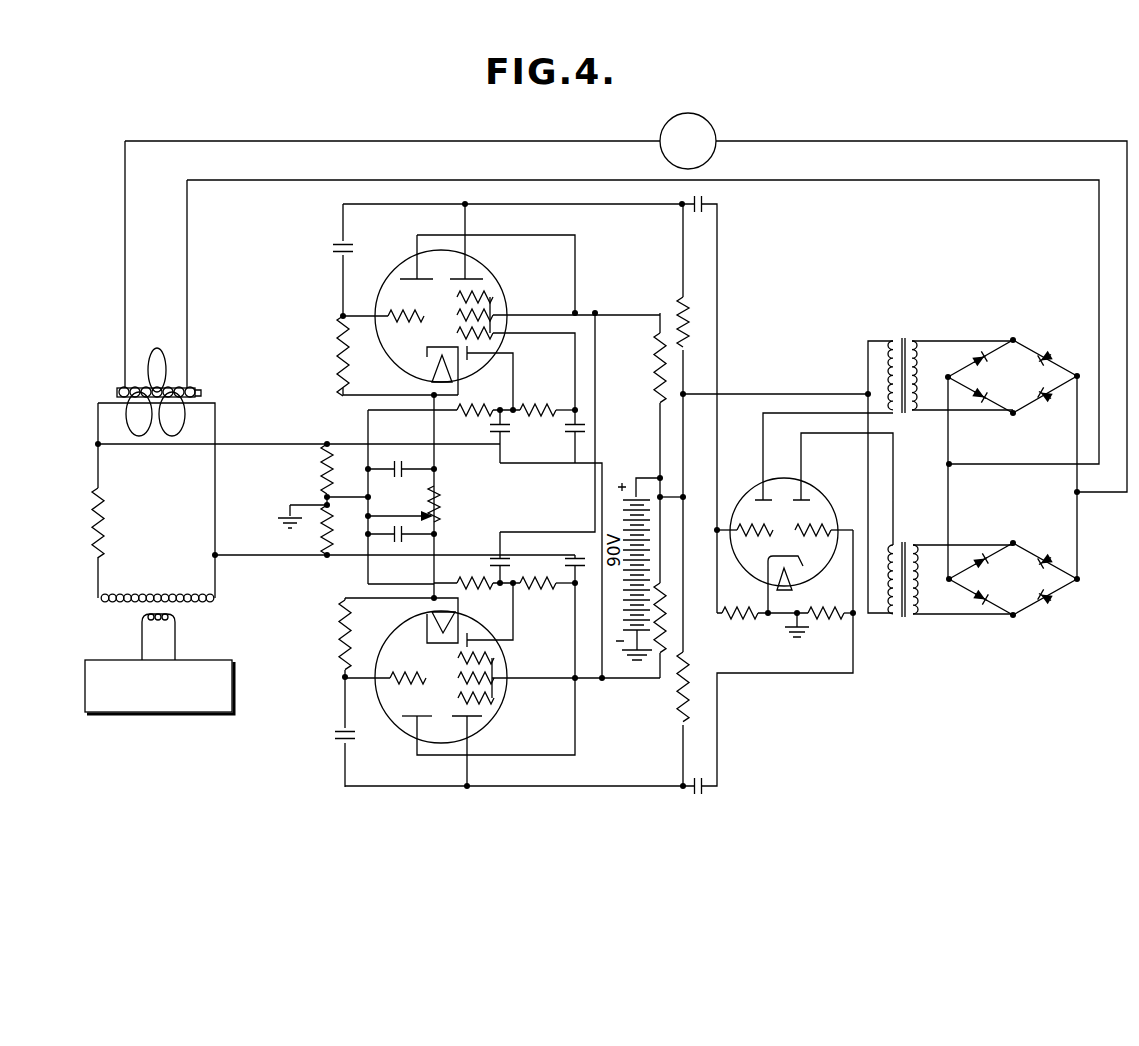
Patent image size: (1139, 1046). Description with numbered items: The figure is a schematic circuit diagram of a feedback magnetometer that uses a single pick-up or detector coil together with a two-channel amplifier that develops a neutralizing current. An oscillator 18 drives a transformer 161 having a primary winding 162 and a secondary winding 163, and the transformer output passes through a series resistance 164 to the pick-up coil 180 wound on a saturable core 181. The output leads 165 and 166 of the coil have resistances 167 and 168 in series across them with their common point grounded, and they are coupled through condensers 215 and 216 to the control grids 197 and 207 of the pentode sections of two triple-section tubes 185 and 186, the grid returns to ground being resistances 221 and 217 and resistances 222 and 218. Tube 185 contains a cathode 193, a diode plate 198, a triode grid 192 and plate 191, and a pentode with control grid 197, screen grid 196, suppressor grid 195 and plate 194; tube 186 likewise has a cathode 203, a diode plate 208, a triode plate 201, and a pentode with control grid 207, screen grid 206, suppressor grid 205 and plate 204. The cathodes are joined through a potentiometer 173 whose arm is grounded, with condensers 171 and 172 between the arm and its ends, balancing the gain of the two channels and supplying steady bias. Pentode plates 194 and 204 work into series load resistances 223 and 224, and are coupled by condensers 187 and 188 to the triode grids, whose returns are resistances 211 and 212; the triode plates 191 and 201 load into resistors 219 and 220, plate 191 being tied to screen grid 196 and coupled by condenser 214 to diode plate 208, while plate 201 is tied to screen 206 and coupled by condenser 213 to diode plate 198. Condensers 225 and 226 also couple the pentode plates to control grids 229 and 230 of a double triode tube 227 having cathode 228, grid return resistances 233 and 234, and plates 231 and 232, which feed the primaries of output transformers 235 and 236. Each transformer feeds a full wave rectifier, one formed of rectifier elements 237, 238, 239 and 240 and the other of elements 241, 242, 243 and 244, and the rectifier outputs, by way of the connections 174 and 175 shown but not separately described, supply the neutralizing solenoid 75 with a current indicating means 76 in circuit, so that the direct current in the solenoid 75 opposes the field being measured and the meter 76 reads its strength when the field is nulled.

The oscillator 18 is at (186, 714).
The neutralizing solenoid 75 is at (160, 348).
The current indicating means 76 is at (712, 122).
The transformer 161 is at (112, 608).
The primary winding 162 is at (168, 625).
The secondary winding 163 is at (173, 596).
The series resistance 164 is at (104, 534).
The output lead 165 is at (258, 446).
The output lead 166 is at (232, 556).
The resistance 167 is at (322, 466).
The resistance 168 is at (322, 542).
The condenser 171 is at (404, 460).
The condenser 172 is at (405, 545).
The potentiometer 173 is at (440, 497).
The conductor 174 is at (812, 181).
The conductor 175 is at (915, 141).
The pick-up coil 180 is at (118, 388).
The saturable core 181 is at (198, 392).
The vacuum tube 185 is at (445, 246).
The vacuum tube 186 is at (374, 690).
The condenser 187 is at (339, 246).
The condenser 188 is at (340, 742).
The plate 191 is at (410, 274).
The grid 192 is at (418, 312).
The cathode 193 is at (428, 368).
The plate 194 is at (476, 276).
The suppressor grid 195 is at (492, 295).
The screen grid 196 is at (495, 312).
The control grid 197 is at (458, 333).
The diode plate 198 is at (478, 352).
The plate 201 is at (410, 724).
The cathode 203 is at (427, 626).
The plate 204 is at (476, 724).
The suppressor grid 205 is at (496, 704).
The screen grid 206 is at (496, 684).
The control grid 207 is at (496, 664).
The diode plate 208 is at (498, 646).
The resistance 211 is at (340, 348).
The resistance 212 is at (343, 632).
The condenser 213 is at (494, 440).
The condenser 214 is at (492, 556).
The condenser 215 is at (578, 438).
The condenser 216 is at (598, 548).
The resistance 217 is at (472, 418).
The resistance 218 is at (472, 586).
The resistor 219 is at (655, 364).
The resistor 220 is at (662, 676).
The resistance 221 is at (536, 406).
The resistance 222 is at (550, 590).
The series resistance 223 is at (690, 350).
The series resistance 224 is at (678, 710).
The condenser 225 is at (695, 200).
The condenser 226 is at (704, 790).
The double triode tube 227 is at (785, 482).
The cathode 228 is at (764, 572).
The control grid 229 is at (764, 528).
The control grid 230 is at (820, 520).
The plate 231 is at (762, 490).
The plate 232 is at (804, 496).
The resistance 233 is at (746, 622).
The resistance 234 is at (834, 622).
The output transformer 235 is at (893, 338).
The output transformer 236 is at (905, 620).
The rectifier element 237 is at (1046, 355).
The rectifier element 238 is at (974, 358).
The rectifier element 239 is at (1046, 400).
The rectifier element 240 is at (978, 400).
The rectifier element 241 is at (1046, 556).
The rectifier element 242 is at (978, 556).
The rectifier element 243 is at (1046, 604).
The rectifier element 244 is at (978, 604).